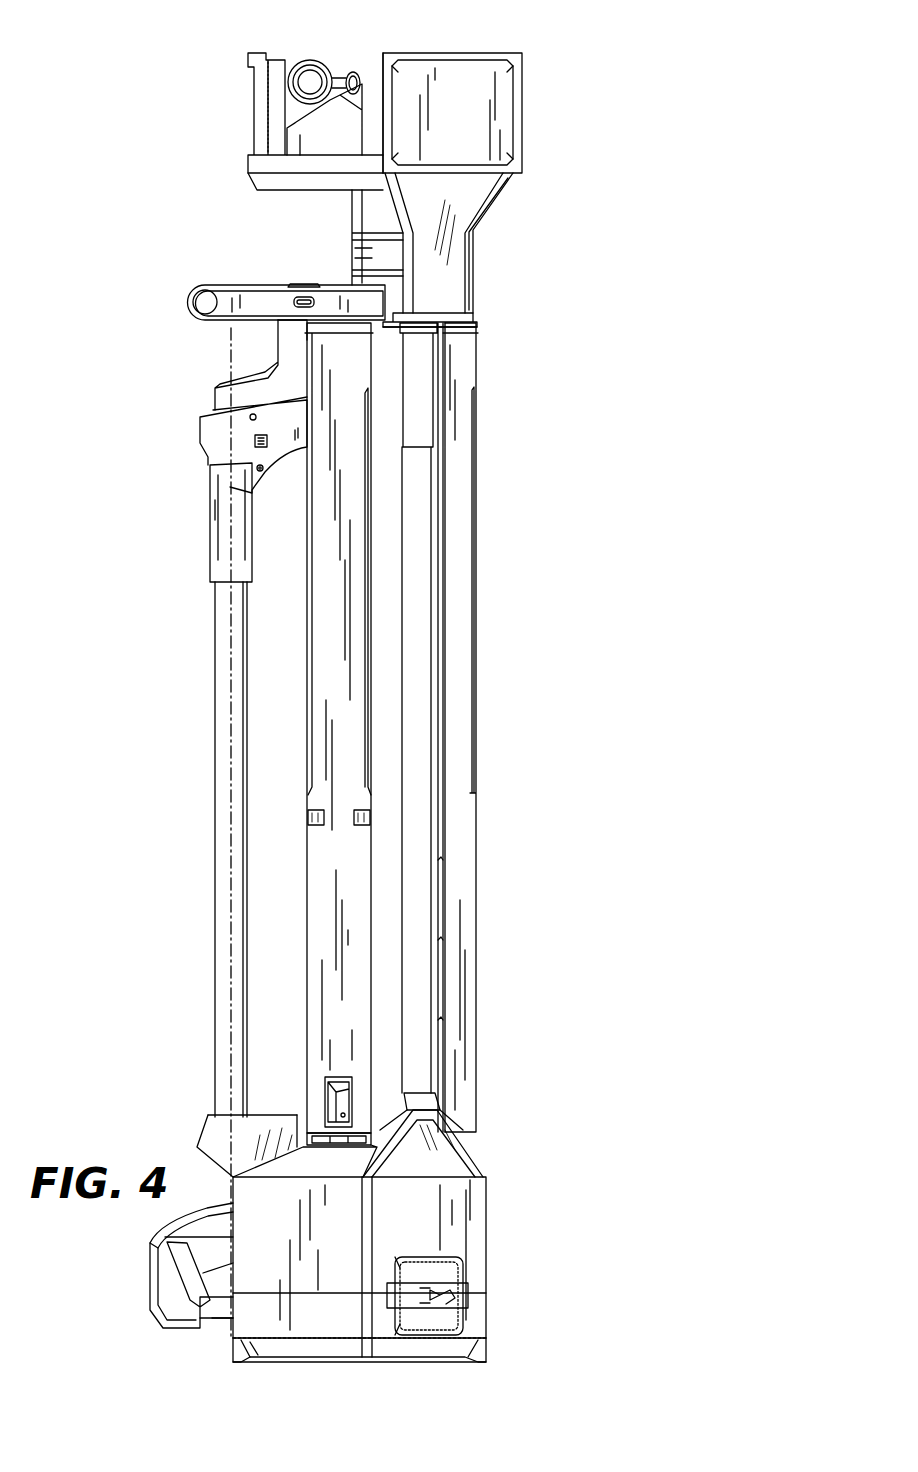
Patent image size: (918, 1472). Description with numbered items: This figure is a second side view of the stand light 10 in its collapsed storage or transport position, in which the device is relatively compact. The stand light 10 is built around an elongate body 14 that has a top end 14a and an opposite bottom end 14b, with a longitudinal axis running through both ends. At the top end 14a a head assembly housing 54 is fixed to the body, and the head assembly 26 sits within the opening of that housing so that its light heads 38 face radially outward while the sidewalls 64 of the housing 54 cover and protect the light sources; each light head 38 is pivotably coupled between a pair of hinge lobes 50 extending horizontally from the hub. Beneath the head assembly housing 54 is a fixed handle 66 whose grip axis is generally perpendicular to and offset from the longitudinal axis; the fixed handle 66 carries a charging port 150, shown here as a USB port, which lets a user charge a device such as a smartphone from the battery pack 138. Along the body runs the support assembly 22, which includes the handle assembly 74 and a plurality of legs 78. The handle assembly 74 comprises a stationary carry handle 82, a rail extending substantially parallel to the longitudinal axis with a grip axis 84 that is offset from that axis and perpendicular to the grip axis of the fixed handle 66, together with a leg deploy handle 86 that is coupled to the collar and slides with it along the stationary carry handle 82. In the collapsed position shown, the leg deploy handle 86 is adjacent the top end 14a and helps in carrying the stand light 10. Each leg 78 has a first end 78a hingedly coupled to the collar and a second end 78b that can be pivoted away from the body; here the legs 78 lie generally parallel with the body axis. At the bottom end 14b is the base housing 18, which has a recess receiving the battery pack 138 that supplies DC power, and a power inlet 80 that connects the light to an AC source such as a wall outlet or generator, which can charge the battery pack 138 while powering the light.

The stand light 10 is at (160, 78).
The elongate body 14 is at (432, 683).
The top end 14a is at (550, 58).
The bottom end 14b is at (503, 1346).
The base housing 18 is at (463, 1215).
The support assembly 22 is at (490, 312).
The head assembly 26 is at (535, 112).
The light head 38 is at (277, 112).
The hinge lobe 50 is at (311, 80).
The head assembly housing 54 is at (531, 168).
The sidewall 64 is at (482, 217).
The fixed handle 66 is at (205, 297).
The handle assembly 74 is at (178, 338).
The leg 78 is at (463, 812).
The first end of leg 78a is at (320, 338).
The second end of leg 78b is at (320, 1123).
The power inlet 80 is at (438, 1277).
The stationary carry handle 82 is at (217, 798).
The grip axis 84 is at (232, 362).
The leg deploy handle 86 is at (210, 537).
The battery pack 138 is at (192, 1265).
The charging port 150 is at (307, 297).